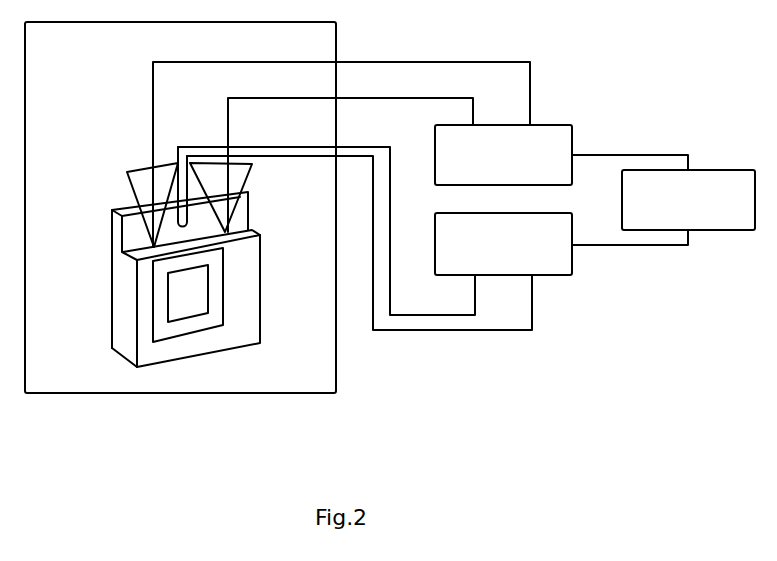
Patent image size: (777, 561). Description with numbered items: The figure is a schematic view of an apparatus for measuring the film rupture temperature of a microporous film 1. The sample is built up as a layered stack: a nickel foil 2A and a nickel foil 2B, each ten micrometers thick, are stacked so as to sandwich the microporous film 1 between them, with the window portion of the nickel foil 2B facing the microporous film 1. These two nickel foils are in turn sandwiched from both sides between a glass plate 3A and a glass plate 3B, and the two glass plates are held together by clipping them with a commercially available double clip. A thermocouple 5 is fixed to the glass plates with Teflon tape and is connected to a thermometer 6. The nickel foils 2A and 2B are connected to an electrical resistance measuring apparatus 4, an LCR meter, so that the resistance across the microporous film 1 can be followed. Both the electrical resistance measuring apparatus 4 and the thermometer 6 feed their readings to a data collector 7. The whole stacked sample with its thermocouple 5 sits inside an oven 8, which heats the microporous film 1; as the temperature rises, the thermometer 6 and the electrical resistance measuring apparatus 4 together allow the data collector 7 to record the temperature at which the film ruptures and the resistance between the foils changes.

The microporous film 1 is at (192, 302).
The nickel foil 2A is at (143, 170).
The nickel foil 2B is at (240, 192).
The glass plate 3A is at (117, 268).
The glass plate 3B is at (128, 324).
The electrical resistance measuring apparatus 4 is at (503, 155).
The thermocouple 5 is at (190, 222).
The thermometer 6 is at (503, 244).
The data collector 7 is at (688, 200).
The oven 8 is at (183, 393).